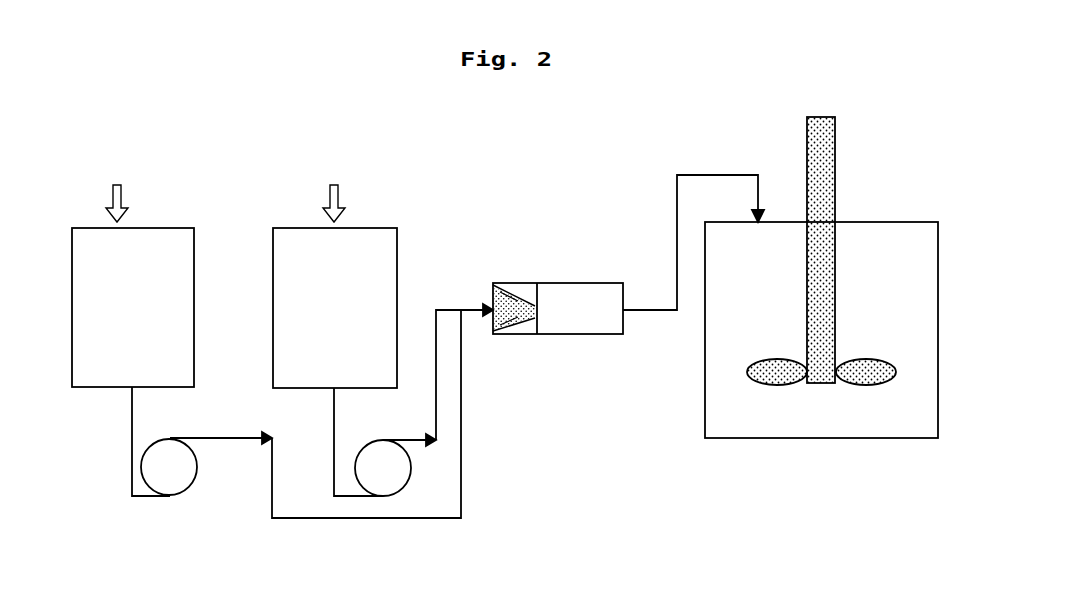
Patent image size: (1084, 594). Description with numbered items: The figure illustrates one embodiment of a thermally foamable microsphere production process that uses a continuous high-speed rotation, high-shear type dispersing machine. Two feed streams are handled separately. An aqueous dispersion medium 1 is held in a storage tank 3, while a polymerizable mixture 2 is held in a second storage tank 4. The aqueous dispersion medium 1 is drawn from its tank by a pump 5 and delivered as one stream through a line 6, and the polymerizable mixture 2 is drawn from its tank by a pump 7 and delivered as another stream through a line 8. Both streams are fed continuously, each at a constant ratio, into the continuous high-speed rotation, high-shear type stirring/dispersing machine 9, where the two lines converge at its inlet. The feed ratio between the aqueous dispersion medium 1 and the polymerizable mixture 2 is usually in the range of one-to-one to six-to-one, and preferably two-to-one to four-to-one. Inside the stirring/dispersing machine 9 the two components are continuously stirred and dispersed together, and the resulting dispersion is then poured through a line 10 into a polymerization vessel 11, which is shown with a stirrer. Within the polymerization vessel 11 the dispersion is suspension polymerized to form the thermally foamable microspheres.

The aqueous dispersion medium 1 is at (117, 188).
The polymerizable mixture 2 is at (334, 188).
The storage tank 3 is at (194, 283).
The storage tank 4 is at (397, 283).
The pump 5 is at (197, 477).
The line 6 is at (461, 436).
The pump 7 is at (411, 477).
The line 8 is at (436, 416).
The continuous high-speed rotation, high-shear type stirring/dispersing machine 9 is at (590, 334).
The line 10 is at (677, 216).
The polymerization vessel 11 is at (825, 438).